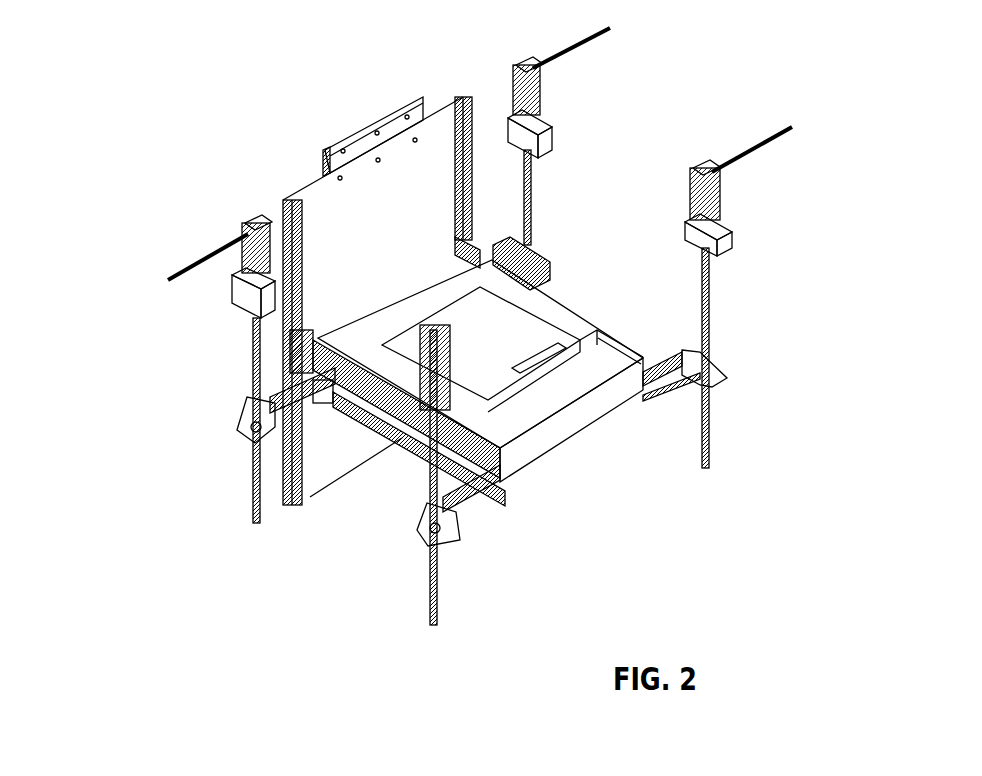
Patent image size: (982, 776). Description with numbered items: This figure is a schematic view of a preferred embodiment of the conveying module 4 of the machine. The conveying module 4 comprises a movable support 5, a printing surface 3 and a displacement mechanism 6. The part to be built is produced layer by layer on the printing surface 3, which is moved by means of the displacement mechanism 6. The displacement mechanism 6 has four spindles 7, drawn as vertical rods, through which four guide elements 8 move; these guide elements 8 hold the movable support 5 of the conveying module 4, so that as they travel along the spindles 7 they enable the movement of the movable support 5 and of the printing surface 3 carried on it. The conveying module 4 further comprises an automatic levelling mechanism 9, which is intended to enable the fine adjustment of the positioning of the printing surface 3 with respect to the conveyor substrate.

The printing surface 3 is at (492, 348).
The conveying module 4 is at (190, 530).
The movable support 5 is at (570, 322).
The displacement mechanism 6 is at (505, 237).
The spindle 7 is at (257, 347).
The guide element 8 is at (552, 120).
The automatic levelling mechanism 9 is at (380, 350).